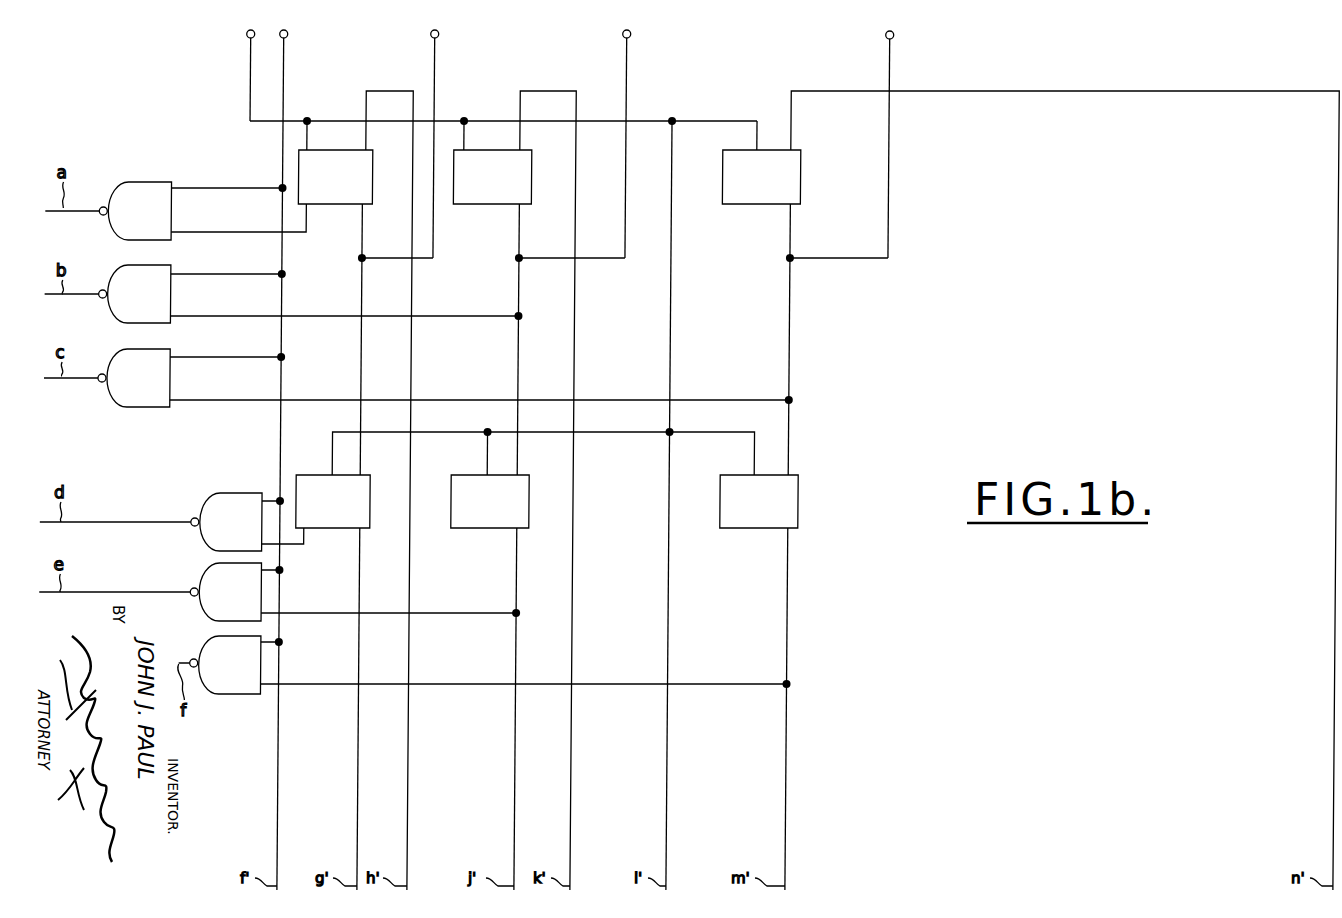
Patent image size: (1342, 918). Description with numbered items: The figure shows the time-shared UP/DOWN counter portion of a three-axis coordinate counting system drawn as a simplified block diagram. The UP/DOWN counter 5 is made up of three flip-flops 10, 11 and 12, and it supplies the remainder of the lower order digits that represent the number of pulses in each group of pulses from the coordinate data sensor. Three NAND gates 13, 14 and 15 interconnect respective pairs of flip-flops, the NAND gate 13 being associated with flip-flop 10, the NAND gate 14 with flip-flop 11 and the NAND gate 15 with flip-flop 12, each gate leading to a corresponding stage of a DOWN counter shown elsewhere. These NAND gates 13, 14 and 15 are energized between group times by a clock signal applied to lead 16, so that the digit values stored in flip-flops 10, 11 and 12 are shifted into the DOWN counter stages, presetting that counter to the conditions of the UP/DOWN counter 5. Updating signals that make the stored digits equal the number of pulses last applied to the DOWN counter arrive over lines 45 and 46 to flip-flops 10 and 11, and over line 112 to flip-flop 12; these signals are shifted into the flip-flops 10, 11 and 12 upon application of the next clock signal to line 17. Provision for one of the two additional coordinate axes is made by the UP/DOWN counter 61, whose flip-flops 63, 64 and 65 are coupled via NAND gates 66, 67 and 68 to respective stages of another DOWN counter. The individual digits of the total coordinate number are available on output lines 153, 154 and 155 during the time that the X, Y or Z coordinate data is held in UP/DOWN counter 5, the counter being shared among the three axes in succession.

The UP/DOWN counter 5 is at (597, 172).
The flip-flop 10 is at (331, 206).
The flip-flop 11 is at (487, 206).
The flip-flop 12 is at (763, 206).
The NAND gate 13 is at (143, 182).
The NAND gate 14 is at (126, 266).
The NAND gate 15 is at (137, 408).
The lead 16 is at (284, 58).
The line 17 is at (251, 58).
The line 45 is at (367, 104).
The line 46 is at (521, 102).
The UP/DOWN counter 61 is at (611, 500).
The flip-flop 63 is at (331, 530).
The flip-flop 64 is at (484, 530).
The flip-flop 65 is at (763, 530).
The NAND gate 66 is at (236, 493).
The NAND gate 67 is at (208, 566).
The NAND gate 68 is at (232, 694).
The line 112 is at (792, 97).
The output line 153 is at (435, 50).
The output line 154 is at (627, 52).
The output line 155 is at (890, 51).